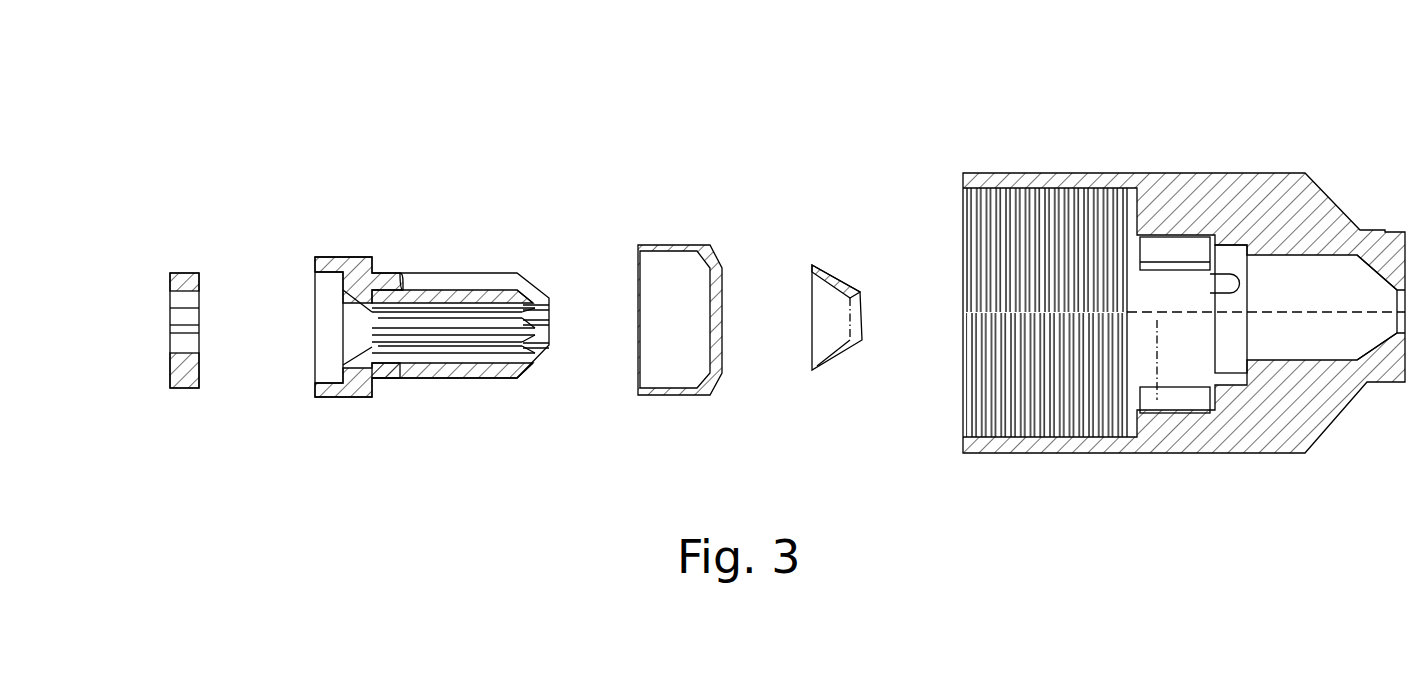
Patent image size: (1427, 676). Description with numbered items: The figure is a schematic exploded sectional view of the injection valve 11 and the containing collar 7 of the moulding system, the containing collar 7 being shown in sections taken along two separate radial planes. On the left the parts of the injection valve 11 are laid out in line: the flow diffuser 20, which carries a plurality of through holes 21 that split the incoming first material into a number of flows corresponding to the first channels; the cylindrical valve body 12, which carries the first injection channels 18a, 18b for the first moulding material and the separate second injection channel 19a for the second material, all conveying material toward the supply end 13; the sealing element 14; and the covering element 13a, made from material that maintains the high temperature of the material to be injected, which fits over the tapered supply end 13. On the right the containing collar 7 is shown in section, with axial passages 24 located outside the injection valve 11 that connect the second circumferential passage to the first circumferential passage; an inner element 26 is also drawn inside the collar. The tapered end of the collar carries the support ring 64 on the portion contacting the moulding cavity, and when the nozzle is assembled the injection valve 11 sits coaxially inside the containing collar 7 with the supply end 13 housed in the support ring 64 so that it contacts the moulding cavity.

The containing collar 7 is at (1184, 296).
The injection valve 11 is at (579, 269).
The cylindrical valve body 12 is at (407, 380).
The supply end 13 is at (548, 347).
The covering element 13a is at (851, 366).
The sealing element 14 is at (663, 396).
The first injection channel 18a is at (420, 296).
The first injection channel 18b is at (443, 338).
The second injection channel 19a is at (490, 280).
The flow diffuser 20 is at (162, 361).
The through holes 21 is at (172, 301).
The axial passages 24 is at (1175, 172).
The inner insert 26 is at (1187, 393).
The support ring 64 is at (1366, 383).